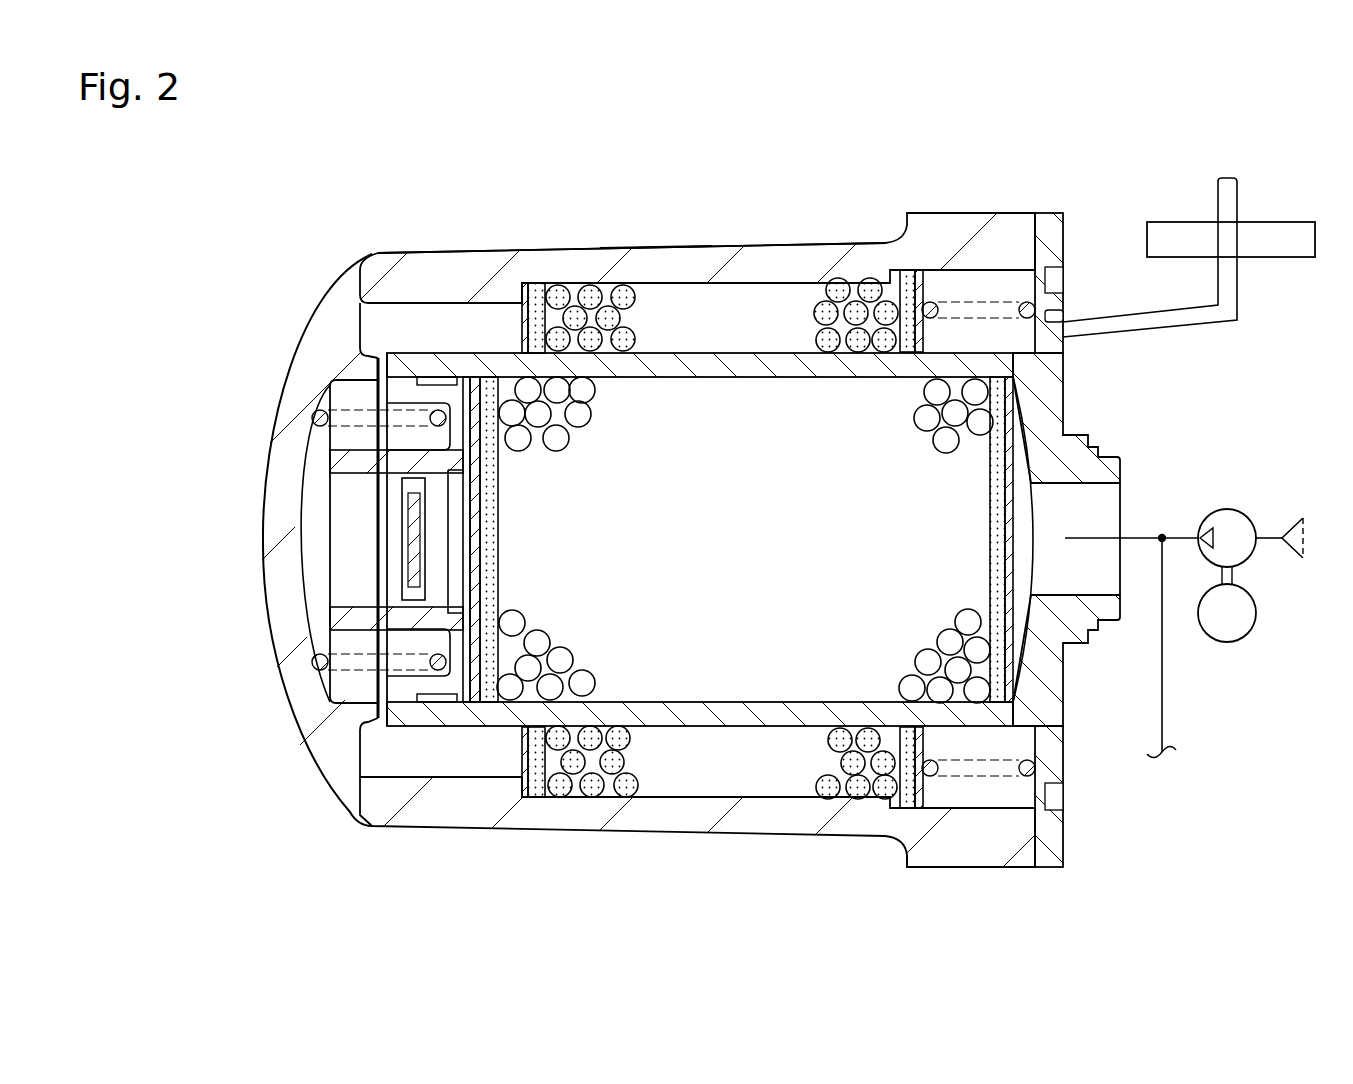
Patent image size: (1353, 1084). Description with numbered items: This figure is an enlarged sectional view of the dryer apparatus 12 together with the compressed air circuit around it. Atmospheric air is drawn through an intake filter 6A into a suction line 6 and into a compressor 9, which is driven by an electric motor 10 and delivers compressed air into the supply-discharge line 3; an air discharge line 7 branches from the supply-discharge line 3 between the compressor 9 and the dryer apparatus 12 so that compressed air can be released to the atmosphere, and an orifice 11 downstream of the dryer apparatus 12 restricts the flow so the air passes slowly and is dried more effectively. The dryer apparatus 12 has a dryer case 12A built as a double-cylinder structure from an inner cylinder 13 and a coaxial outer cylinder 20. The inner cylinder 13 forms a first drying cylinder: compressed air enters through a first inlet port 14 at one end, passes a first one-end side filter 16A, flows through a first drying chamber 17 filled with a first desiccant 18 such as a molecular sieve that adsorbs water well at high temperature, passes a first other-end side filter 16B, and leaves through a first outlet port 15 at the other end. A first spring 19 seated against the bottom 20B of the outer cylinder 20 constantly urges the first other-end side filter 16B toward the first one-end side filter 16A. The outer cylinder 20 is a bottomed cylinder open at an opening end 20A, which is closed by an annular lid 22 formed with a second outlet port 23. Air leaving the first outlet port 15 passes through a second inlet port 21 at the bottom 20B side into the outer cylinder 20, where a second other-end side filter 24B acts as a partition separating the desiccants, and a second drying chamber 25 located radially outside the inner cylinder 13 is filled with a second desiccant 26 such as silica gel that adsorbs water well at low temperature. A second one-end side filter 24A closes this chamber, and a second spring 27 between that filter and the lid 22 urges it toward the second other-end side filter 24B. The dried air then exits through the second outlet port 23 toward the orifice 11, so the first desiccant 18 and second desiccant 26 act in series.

The supply-discharge line 3 is at (1157, 535).
The suction line 6 is at (1268, 546).
The intake filter 6A is at (1293, 518).
The air discharge line 7 is at (1165, 717).
The compressor 9 is at (1226, 509).
The electric motor 10 is at (1228, 643).
The orifice 11 is at (1192, 240).
The dryer apparatus 12 is at (758, 208).
The dryer case 12A is at (712, 238).
The inner cylinder 13 is at (773, 710).
The first inlet port 14 is at (1082, 593).
The first outlet port 15 is at (357, 475).
The first one-end side filter 16A is at (997, 418).
The first other-end side filter 16B is at (484, 692).
The first drying chamber 17 is at (680, 560).
The first desiccant 18 is at (510, 410).
The first spring 19 is at (320, 660).
The outer cylinder 20 is at (826, 268).
The opening end 20A is at (1040, 835).
The bottom 20B is at (297, 537).
The second inlet port 21 is at (413, 310).
The lid 22 is at (1050, 257).
The second outlet port 23 is at (1067, 318).
The second one-end side filter 24A is at (908, 297).
The second other-end side filter 24B is at (533, 283).
The second drying chamber 25 is at (672, 322).
The second desiccant 26 is at (590, 298).
The second spring 27 is at (1027, 302).